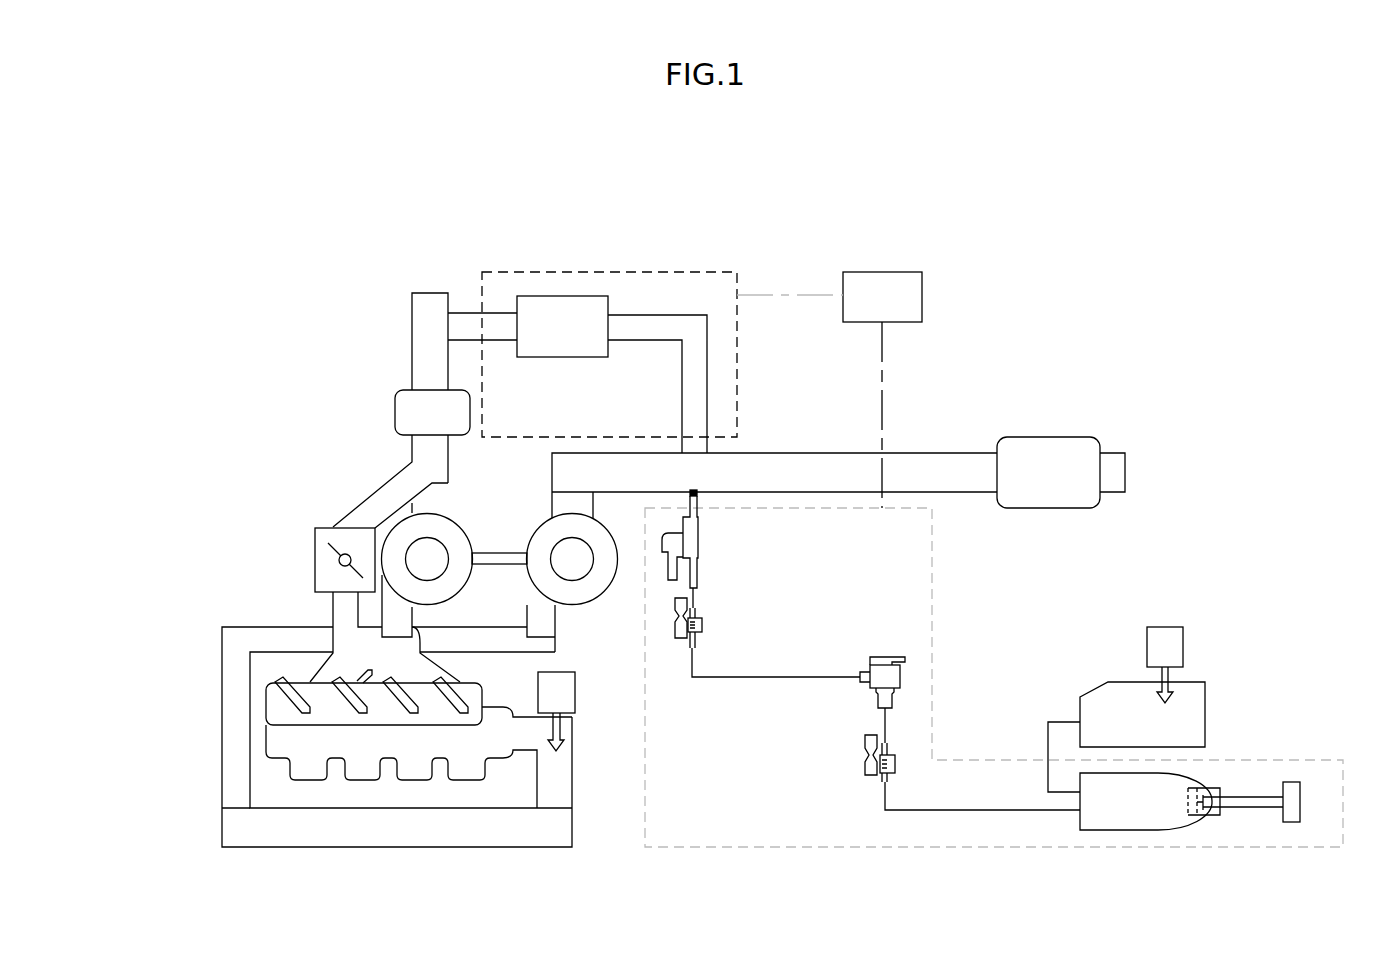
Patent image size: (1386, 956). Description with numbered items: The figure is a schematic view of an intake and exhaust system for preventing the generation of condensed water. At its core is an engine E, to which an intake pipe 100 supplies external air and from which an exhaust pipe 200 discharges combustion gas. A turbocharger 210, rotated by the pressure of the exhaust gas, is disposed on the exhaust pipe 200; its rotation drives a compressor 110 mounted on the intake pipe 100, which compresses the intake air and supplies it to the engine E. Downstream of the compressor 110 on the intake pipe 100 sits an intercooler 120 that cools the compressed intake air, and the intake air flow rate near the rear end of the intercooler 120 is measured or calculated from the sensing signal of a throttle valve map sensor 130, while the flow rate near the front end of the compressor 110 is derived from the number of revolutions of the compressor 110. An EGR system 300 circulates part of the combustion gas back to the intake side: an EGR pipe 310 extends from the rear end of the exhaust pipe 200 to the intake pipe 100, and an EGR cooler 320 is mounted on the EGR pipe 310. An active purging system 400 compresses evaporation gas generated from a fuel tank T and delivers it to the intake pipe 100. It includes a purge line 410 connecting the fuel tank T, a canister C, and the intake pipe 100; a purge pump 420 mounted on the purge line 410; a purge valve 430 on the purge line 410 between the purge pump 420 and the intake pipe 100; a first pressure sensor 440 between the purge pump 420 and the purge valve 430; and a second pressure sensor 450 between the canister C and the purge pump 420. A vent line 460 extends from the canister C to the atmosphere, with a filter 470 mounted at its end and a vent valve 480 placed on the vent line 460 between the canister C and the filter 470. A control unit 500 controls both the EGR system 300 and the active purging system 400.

The intake pipe 100 is at (797, 458).
The compressor 110 is at (533, 530).
The intercooler 120 is at (247, 827).
The throttle valve map sensor 130 is at (567, 697).
The exhaust pipe 200 is at (425, 345).
The turbocharger 210 is at (465, 527).
The EGR system 300 is at (578, 205).
The EGR pipe 310 is at (657, 320).
The EGR cooler 320 is at (555, 303).
The active purging system 400 is at (932, 635).
The purge line 410 is at (785, 675).
The purge pump 420 is at (888, 670).
The purge valve 430 is at (697, 548).
The first pressure sensor 440 is at (697, 623).
The second pressure sensor 450 is at (872, 762).
The vent line 460 is at (1252, 807).
The filter 470 is at (1290, 793).
The vent valve 480 is at (1212, 788).
The control unit 500 is at (910, 302).
The engine E is at (280, 712).
The fuel tank T is at (1193, 693).
The canister C is at (1117, 813).